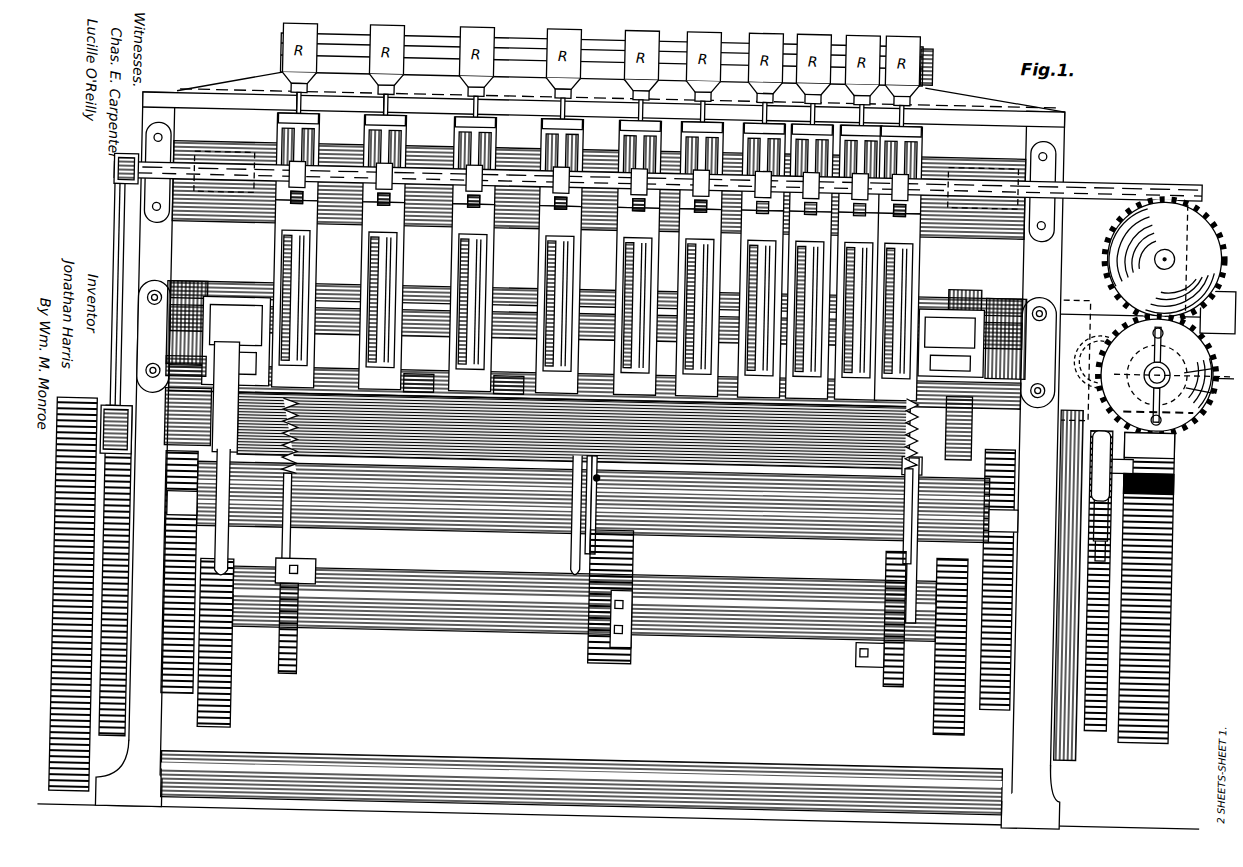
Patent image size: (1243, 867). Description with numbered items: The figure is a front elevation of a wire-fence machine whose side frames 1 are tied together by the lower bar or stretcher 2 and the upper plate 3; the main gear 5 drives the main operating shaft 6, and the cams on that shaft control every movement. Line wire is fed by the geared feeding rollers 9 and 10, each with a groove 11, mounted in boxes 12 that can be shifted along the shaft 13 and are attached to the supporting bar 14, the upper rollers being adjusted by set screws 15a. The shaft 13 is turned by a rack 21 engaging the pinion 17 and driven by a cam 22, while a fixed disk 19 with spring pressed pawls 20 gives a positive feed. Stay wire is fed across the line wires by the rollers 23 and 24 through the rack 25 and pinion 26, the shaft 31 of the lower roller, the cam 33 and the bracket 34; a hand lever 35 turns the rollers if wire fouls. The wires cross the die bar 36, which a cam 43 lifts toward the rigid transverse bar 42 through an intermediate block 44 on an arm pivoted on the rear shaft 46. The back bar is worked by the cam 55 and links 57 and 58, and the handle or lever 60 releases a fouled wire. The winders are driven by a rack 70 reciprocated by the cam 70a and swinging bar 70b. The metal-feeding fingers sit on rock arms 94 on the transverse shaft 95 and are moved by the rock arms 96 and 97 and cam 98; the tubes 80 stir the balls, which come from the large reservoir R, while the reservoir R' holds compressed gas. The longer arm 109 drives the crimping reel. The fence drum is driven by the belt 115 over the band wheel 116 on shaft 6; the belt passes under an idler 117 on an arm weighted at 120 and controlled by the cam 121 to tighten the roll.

The side frame 1 is at (584, 460).
The lower bar or stretcher 2 is at (582, 783).
The upper plate 3 is at (621, 71).
The main gear 5 is at (70, 668).
The main operating shaft 6 is at (434, 622).
The geared feeding roller 9 is at (595, 325).
The geared feeding roller 10 is at (302, 255).
The groove 11 is at (306, 282).
The box 12 is at (594, 395).
The shaft 13 is at (422, 371).
The supporting bar 14 is at (508, 395).
The set screw 15a is at (308, 194).
The pinion 17 is at (244, 292).
The fixed disk 19 is at (188, 288).
The spring pressed pawl 20 is at (1000, 278).
The rack 21 is at (220, 410).
The cam 22 is at (230, 650).
The roller 23 is at (1160, 428).
The roller 24 is at (1200, 202).
The rack 25 is at (1085, 398).
The pinion 26 is at (1110, 355).
The shaft 31 is at (1209, 388).
The cam 33 is at (1075, 742).
The bracket 34 is at (1148, 318).
The hand lever 35 is at (1206, 357).
The die bar 36 is at (573, 430).
The rigid transverse bar 42 is at (240, 205).
The cam 43 is at (178, 608).
The intermediate block 44 is at (592, 511).
The rear shaft 46 is at (593, 501).
The cam 55 is at (644, 655).
The link 57 is at (602, 490).
The link 58 is at (606, 462).
The handle or lever 60 is at (580, 554).
The rack 70 is at (306, 433).
The cam 70a is at (318, 562).
The swinging bar 70b is at (285, 560).
The tube 80 is at (306, 96).
The rock arm 94 is at (405, 168).
The transverse shaft 95 is at (218, 170).
The rock arm 96 is at (116, 170).
The rod 97 is at (117, 222).
The cam 98 is at (113, 570).
The arm 109 is at (218, 529).
The belt 115 is at (1165, 462).
The band wheel 116 is at (1150, 720).
The idler 117 is at (1165, 445).
The weight 120 is at (1165, 478).
The cam 121 is at (1100, 700).
The reservoir for balls R is at (601, 75).
The reservoir for compressed gas R' is at (719, 51).